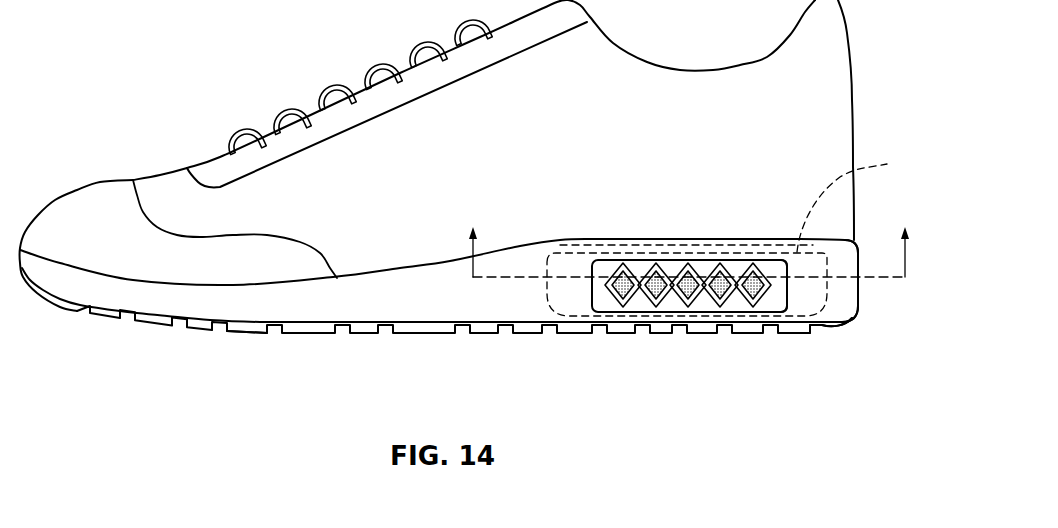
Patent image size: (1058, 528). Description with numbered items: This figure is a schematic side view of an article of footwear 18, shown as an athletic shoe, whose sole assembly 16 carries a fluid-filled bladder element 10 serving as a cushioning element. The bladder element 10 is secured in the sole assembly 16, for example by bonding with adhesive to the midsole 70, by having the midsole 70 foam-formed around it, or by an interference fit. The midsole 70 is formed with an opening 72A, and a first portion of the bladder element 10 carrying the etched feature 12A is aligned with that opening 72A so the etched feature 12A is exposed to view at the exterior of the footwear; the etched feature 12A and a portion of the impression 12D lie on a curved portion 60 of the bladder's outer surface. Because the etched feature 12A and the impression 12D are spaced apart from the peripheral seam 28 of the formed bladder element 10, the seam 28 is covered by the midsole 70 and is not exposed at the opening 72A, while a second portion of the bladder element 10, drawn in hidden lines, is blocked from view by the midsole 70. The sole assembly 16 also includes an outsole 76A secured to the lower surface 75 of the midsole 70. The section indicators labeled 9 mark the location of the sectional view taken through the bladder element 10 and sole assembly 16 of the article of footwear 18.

The article of footwear 18 is at (133, 120).
The section line 9- 9 is at (692, 234).
The bladder element 10 is at (558, 327).
The etched feature 12A is at (640, 306).
The impression 12D is at (707, 280).
The sole assembly 16 is at (872, 292).
The peripheral seam 28 is at (858, 203).
The curved portion 60 is at (812, 292).
The midsole 70 is at (440, 300).
The opening 72A is at (780, 295).
The lower surface 75 is at (201, 333).
The outsole 76A is at (248, 336).